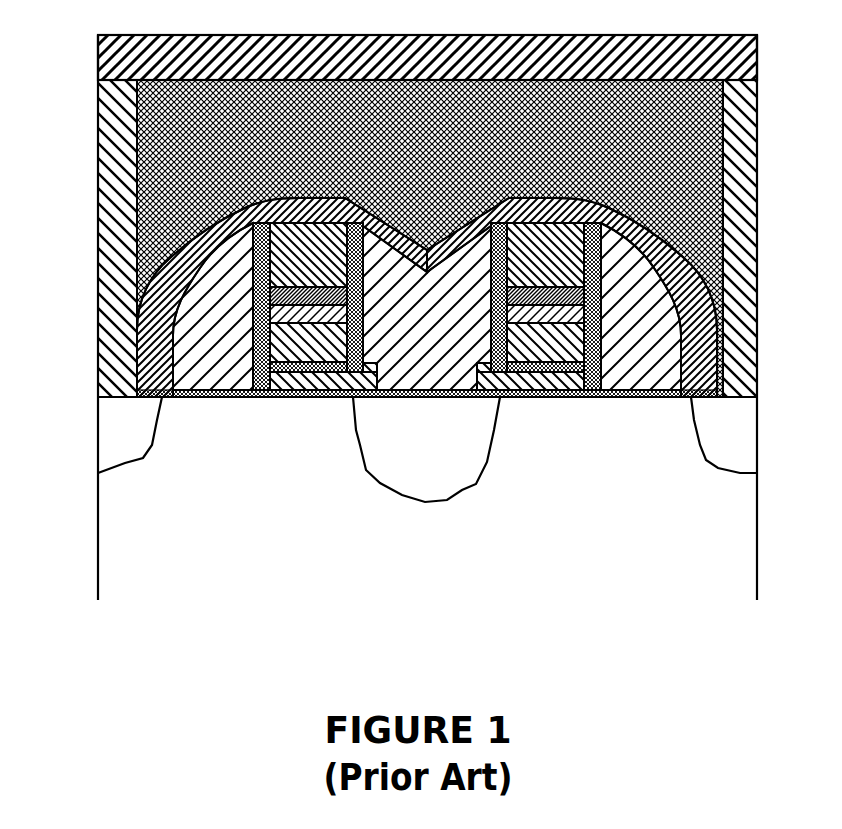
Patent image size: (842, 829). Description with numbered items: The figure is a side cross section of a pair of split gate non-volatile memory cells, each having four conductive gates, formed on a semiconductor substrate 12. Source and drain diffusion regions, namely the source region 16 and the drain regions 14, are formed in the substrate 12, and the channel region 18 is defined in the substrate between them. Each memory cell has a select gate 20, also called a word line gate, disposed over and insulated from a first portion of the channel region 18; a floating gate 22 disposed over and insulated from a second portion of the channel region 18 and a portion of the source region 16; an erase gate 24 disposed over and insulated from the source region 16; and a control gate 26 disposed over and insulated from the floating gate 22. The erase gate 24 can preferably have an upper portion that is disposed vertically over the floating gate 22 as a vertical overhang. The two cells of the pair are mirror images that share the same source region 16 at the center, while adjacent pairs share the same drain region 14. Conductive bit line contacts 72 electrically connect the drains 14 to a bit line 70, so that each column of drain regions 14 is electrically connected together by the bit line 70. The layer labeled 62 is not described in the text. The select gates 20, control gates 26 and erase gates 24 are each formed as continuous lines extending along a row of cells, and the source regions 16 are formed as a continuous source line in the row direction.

The semiconductor substrate 12 is at (172, 557).
The drain region 14 is at (133, 445).
The source region 16 is at (443, 442).
The channel region 18 is at (681, 421).
The select gate 20 is at (652, 334).
The floating gate 22 is at (601, 448).
The erase gate 24 is at (443, 329).
The control gate 26 is at (590, 437).
The liner layer 62 is at (718, 372).
The bit line 70 is at (745, 74).
The bit line contacts 72 is at (758, 194).